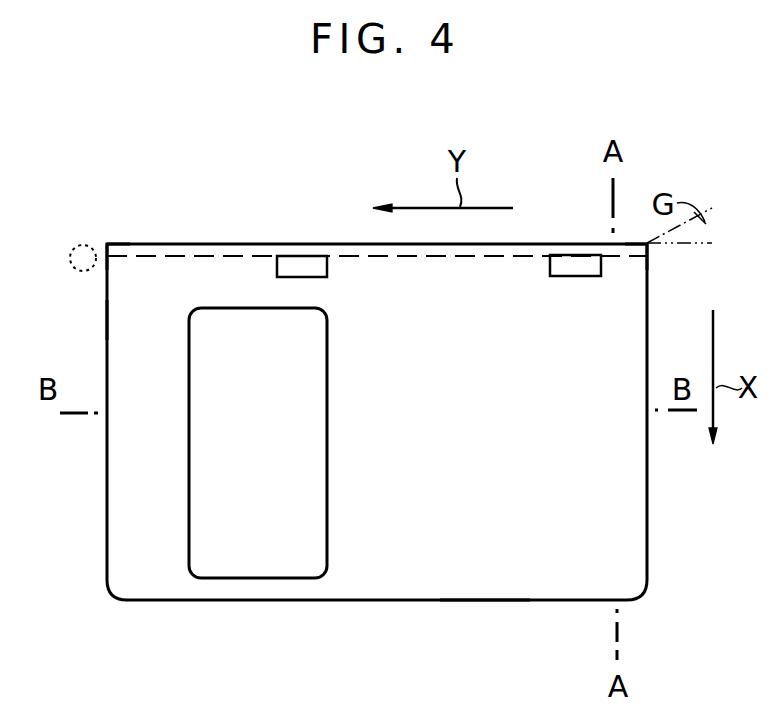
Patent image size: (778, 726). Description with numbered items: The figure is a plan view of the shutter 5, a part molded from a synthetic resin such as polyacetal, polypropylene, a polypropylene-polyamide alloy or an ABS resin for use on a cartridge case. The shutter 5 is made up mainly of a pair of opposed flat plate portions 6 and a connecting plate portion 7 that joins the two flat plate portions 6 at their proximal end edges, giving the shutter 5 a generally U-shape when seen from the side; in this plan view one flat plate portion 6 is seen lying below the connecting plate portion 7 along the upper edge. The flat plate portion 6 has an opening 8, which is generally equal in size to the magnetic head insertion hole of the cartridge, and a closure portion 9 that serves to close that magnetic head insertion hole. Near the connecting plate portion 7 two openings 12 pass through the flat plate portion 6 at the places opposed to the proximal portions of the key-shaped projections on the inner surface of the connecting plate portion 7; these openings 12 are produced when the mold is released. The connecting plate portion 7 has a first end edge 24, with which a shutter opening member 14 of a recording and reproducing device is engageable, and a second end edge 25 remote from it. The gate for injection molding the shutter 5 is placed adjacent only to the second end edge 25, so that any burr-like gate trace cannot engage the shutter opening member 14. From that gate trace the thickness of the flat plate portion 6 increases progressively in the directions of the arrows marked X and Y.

The shutter 5 is at (172, 200).
The flat plate portion 6 is at (118, 322).
The connecting plate portion 7 is at (228, 256).
The opening 8 is at (192, 532).
The closure portion 9 is at (483, 580).
The openings 12 is at (300, 266).
The shutter opening member 14 is at (74, 250).
The first end edge 24 is at (107, 246).
The second end edge 25 is at (650, 247).